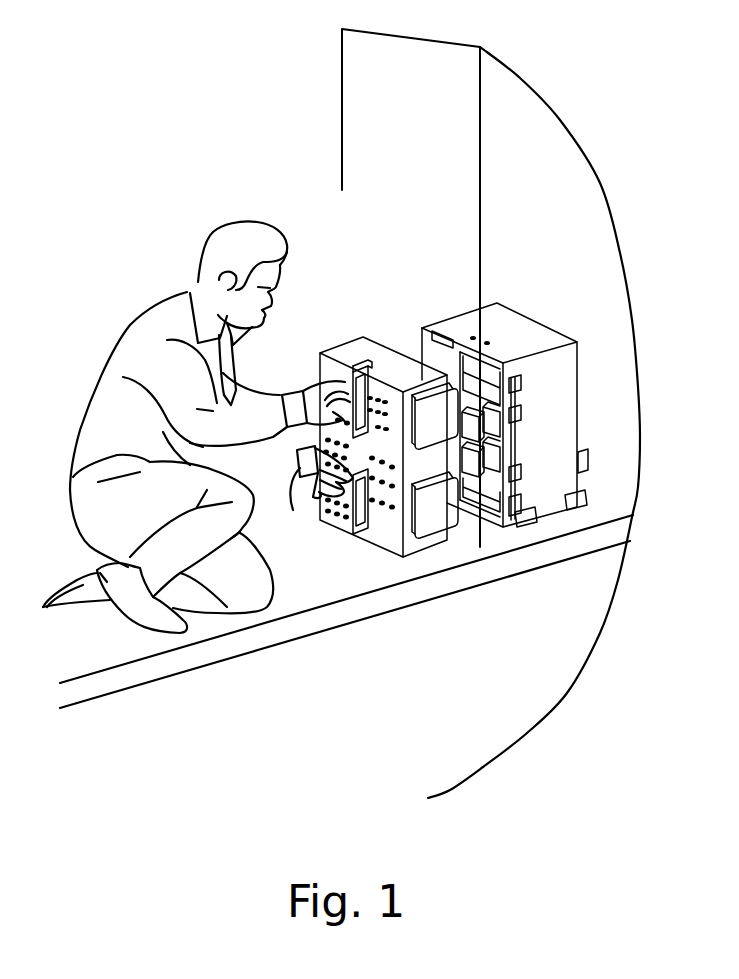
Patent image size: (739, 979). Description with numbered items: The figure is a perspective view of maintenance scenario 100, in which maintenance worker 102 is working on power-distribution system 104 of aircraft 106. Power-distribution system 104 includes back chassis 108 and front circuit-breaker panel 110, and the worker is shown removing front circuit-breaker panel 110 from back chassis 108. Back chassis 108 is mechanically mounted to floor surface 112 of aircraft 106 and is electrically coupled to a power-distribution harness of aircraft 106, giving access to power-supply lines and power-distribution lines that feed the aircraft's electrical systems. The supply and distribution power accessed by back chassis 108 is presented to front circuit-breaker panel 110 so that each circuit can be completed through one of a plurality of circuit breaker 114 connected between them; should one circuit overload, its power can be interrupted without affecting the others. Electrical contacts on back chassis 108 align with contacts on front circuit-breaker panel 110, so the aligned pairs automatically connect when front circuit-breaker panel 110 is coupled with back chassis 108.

The maintenance scenario 100 is at (148, 257).
The maintenance worker 102 is at (150, 333).
The power-distribution system 104 is at (417, 405).
The aircraft 106 is at (597, 183).
The back chassis 108 is at (517, 317).
The front circuit-breaker panel 110 is at (437, 543).
The floor surface 112 is at (290, 716).
The circuit breaker 114 is at (386, 512).